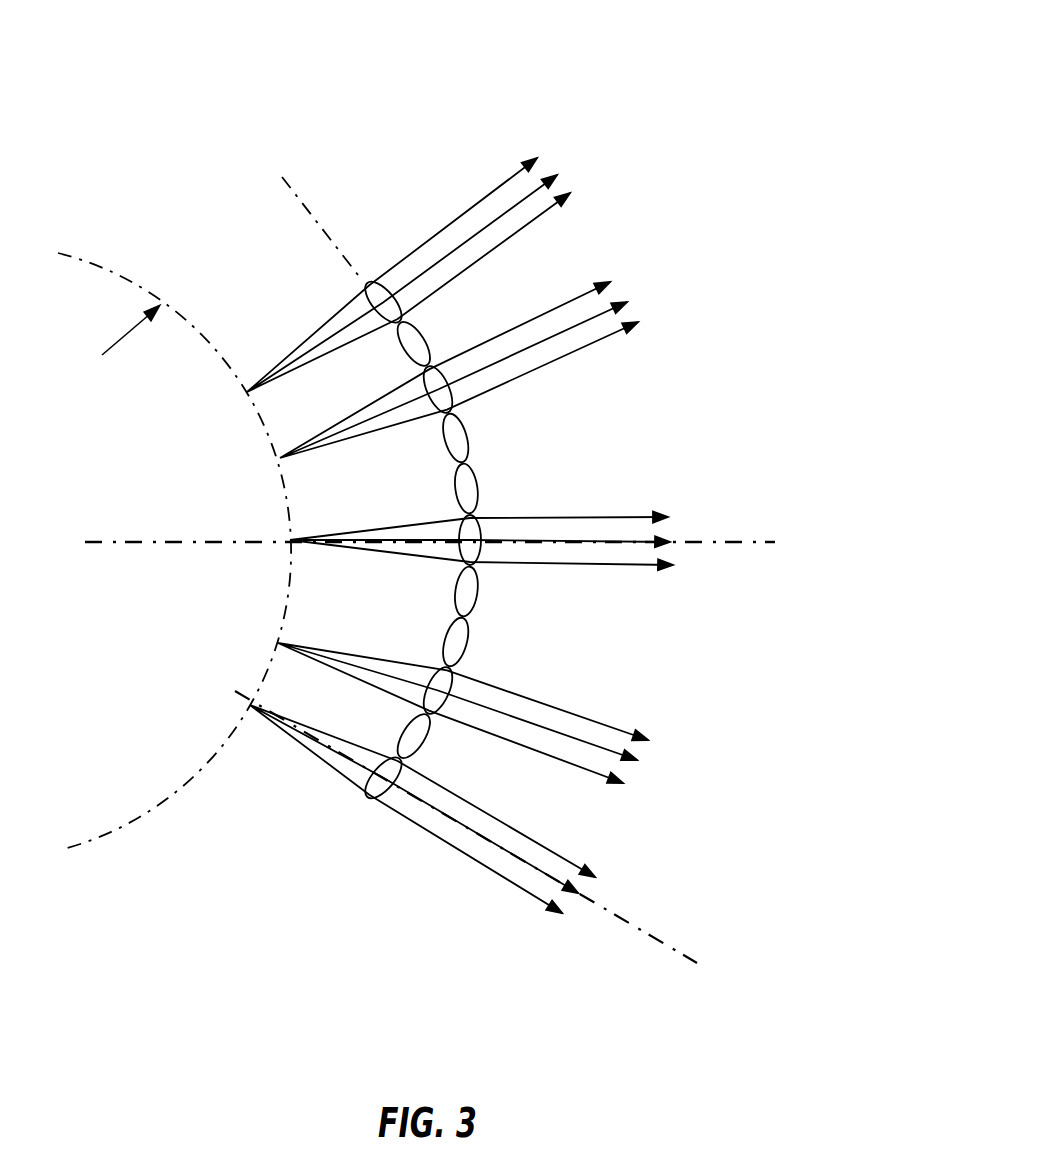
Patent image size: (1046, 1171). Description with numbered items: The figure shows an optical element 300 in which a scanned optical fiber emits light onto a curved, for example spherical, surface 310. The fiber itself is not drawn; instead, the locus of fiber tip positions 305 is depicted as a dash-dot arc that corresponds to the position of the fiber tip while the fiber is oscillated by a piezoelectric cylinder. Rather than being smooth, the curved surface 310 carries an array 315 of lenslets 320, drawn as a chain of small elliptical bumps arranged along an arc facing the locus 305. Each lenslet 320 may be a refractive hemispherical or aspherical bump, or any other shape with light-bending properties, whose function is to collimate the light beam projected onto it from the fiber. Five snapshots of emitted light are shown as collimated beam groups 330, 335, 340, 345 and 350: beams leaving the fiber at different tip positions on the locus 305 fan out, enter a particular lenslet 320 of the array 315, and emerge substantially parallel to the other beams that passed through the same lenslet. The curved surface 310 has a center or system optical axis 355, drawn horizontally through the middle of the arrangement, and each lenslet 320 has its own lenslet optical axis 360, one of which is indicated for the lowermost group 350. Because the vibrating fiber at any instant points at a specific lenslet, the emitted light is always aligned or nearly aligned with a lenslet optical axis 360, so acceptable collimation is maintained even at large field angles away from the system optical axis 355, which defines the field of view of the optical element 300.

The optical element 300 is at (733, 69).
The locus of fiber tip positions 305 is at (121, 278).
The curved surface 310 is at (300, 198).
The array of lenslets 315 is at (508, 540).
The lenslet 320 is at (502, 475).
The collimated beam group 330 is at (493, 190).
The collimated beam group 335 is at (578, 296).
The collimated beam group 340 is at (553, 516).
The collimated beam group 345 is at (538, 702).
The collimated beam group 350 is at (513, 832).
The system optical axis 355 is at (692, 541).
The lenslet optical axis 360 is at (613, 915).